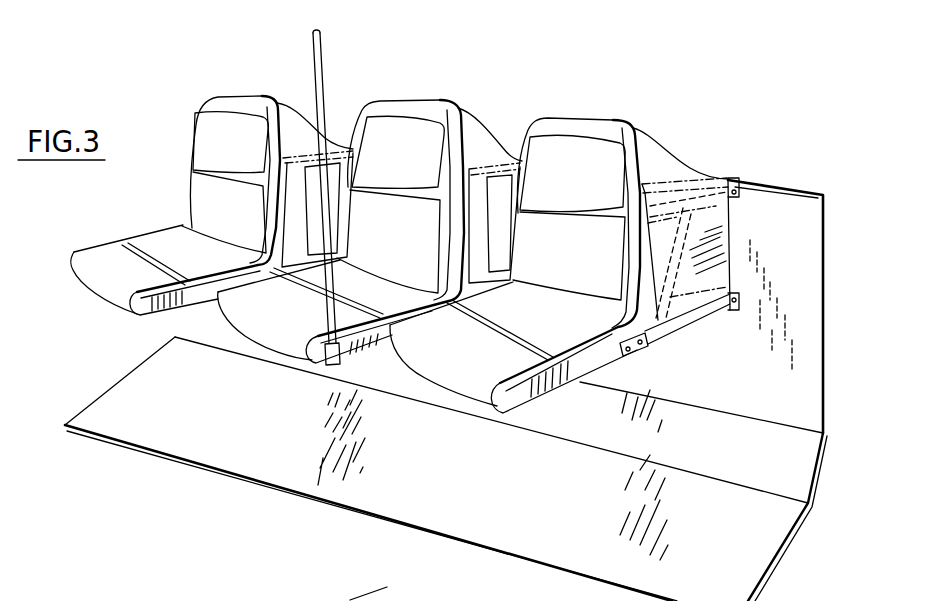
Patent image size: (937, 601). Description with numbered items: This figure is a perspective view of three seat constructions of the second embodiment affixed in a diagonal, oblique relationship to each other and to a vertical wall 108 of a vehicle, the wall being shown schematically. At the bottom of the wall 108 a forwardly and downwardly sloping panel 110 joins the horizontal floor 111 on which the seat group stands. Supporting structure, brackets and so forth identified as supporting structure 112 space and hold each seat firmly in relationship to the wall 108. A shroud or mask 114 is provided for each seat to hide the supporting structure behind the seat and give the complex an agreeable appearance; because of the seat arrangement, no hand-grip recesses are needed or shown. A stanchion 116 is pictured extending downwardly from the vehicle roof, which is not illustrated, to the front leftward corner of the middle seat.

The wall 108 is at (811, 300).
The panel 110 is at (808, 450).
The floor 111 is at (770, 547).
The supporting structure 112 is at (718, 192).
The shroud 114 is at (337, 140).
The stanchion 116 is at (321, 54).